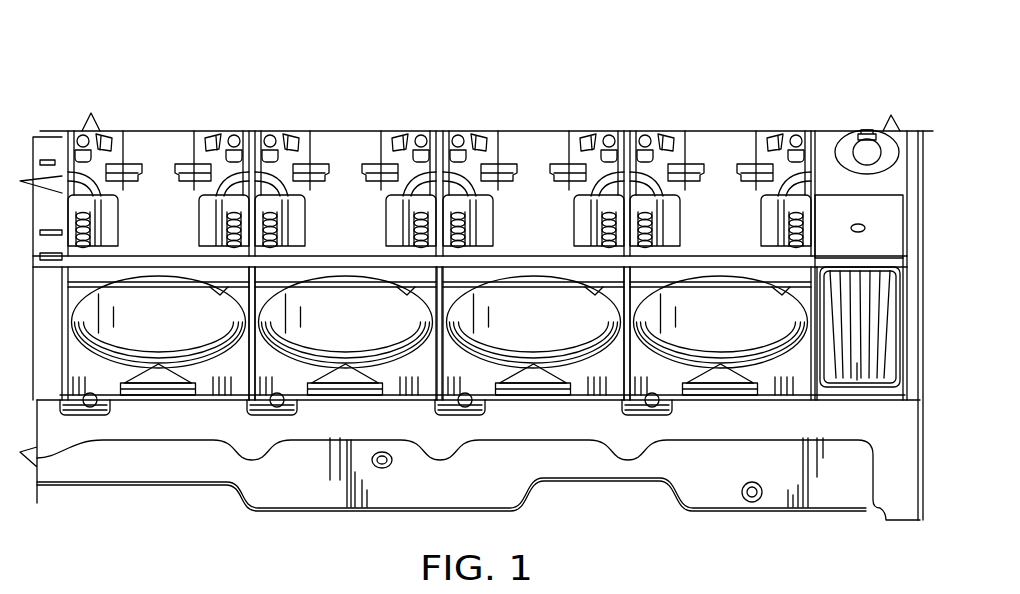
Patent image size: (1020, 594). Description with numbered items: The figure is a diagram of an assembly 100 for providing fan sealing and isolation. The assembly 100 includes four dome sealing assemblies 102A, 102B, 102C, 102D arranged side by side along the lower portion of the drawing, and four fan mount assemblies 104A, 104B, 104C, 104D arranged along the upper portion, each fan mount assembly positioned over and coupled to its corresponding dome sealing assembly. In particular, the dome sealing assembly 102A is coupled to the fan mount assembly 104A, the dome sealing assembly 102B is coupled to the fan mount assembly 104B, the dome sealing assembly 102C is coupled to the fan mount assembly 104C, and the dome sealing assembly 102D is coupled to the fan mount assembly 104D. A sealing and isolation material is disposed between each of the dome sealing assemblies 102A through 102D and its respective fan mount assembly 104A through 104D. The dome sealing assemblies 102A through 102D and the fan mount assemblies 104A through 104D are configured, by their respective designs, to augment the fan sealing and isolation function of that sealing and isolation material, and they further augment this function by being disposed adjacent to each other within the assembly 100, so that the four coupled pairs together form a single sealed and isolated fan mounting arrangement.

The assembly 100 is at (476, 292).
The dome sealing assembly 102A is at (153, 402).
The dome sealing assembly 102B is at (313, 402).
The dome sealing assembly 102C is at (550, 402).
The dome sealing assembly 102D is at (693, 402).
The fan mount assembly 104A is at (157, 185).
The fan mount assembly 104B is at (345, 183).
The fan mount assembly 104C is at (532, 182).
The fan mount assembly 104D is at (720, 183).